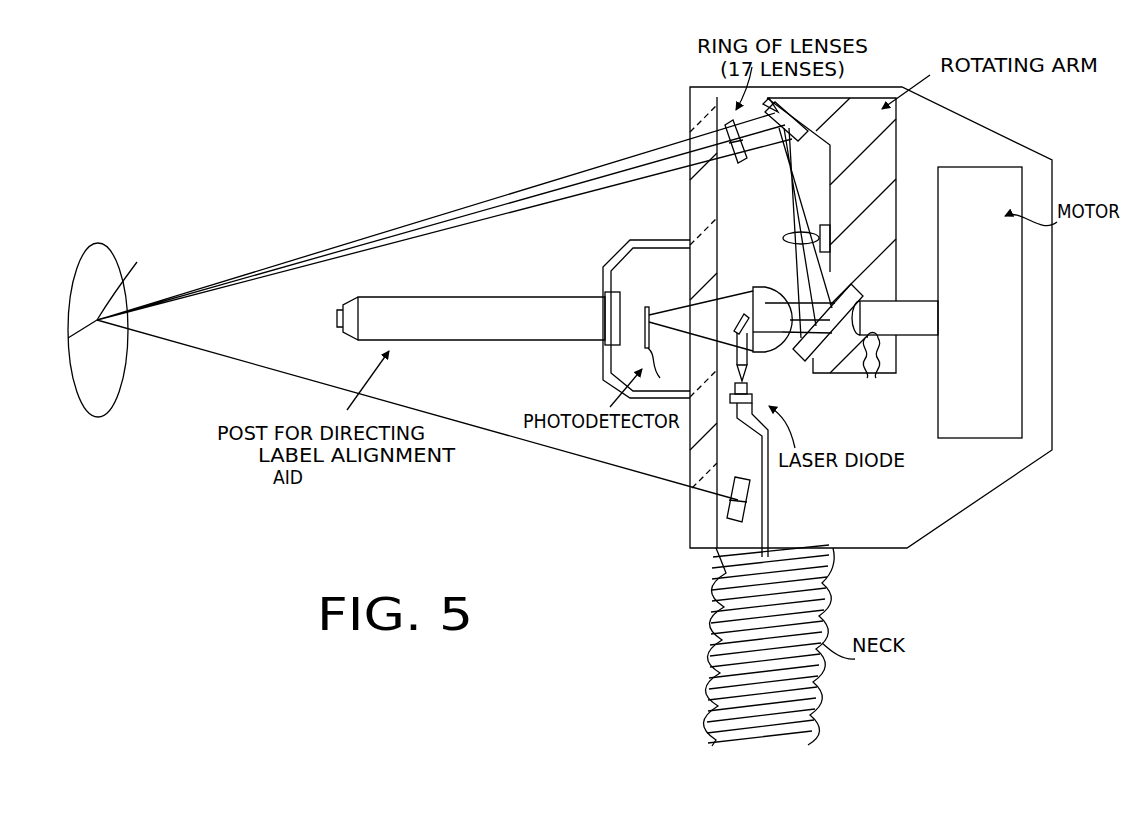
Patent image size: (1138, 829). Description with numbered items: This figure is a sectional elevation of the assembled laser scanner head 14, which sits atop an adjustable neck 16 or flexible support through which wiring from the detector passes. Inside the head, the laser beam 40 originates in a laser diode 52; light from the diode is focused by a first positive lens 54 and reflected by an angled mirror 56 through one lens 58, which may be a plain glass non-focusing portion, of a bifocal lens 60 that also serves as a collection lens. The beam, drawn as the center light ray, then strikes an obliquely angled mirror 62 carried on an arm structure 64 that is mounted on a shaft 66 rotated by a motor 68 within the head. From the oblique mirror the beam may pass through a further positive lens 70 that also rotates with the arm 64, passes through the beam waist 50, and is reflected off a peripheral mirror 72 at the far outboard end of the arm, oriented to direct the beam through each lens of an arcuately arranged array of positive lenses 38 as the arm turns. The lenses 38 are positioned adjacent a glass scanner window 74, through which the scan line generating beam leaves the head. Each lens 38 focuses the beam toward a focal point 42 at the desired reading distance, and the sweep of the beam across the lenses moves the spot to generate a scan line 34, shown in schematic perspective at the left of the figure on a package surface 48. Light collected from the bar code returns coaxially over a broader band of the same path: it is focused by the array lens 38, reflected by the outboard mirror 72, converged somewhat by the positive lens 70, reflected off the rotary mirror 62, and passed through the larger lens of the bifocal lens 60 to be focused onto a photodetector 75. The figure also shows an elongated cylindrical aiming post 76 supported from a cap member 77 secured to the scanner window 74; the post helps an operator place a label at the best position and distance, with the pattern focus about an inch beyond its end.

The scanner head 14 is at (1009, 123).
The adjustable neck 16 is at (826, 672).
The scan line 34 is at (121, 304).
The array of lenses 38 is at (723, 133).
The laser beam 40 is at (785, 150).
The focal point 42 is at (128, 282).
The package surface 48 is at (105, 288).
The beam waist 50 is at (794, 192).
The laser diode 52 is at (750, 387).
The first positive lens 54 is at (746, 372).
The angled mirror 56 is at (742, 318).
The lens of bifocal lens 58 is at (768, 322).
The bifocal lens 60 is at (765, 300).
The obliquely angled mirror 62 is at (833, 322).
The arm structure 64 is at (896, 161).
The shaft 66 is at (915, 337).
The motor 68 is at (983, 273).
The further positive lens 70 is at (784, 236).
The peripheral mirror 72 is at (772, 117).
The glass scanner window 74 is at (735, 500).
The photodetector 75 is at (645, 340).
The aiming post 76 is at (510, 298).
The cap member 77 is at (608, 257).